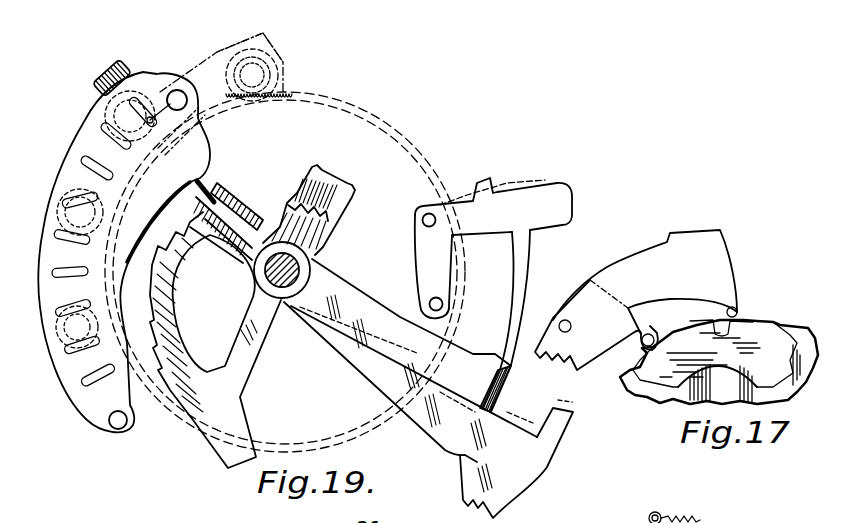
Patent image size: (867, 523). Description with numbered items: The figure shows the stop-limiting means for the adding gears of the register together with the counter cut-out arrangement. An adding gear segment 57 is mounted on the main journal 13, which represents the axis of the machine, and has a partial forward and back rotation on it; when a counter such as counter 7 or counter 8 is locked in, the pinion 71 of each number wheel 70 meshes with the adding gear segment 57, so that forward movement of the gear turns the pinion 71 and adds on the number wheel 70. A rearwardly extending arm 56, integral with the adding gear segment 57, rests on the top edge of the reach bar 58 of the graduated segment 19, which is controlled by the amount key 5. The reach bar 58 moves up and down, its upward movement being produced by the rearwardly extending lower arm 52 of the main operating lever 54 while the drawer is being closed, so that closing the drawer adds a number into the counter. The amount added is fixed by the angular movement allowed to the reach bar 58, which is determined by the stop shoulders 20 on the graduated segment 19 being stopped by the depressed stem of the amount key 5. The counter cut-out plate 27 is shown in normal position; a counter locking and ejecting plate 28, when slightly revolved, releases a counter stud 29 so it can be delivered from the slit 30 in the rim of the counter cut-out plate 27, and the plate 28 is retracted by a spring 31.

In FIG. 19, the amount key 5 is at (99, 77).
In FIG. 17, the counter 7 is at (645, 290).
In FIG. 17, the counter 8 is at (588, 325).
In FIG. 19, the main journal 13 is at (295, 270).
In FIG. 19, the graduated segment 19 is at (222, 206).
In FIG. 19, the stop shoulder 20 is at (208, 200).
In FIG. 17, the counter-cut-out plate 27 is at (743, 330).
In FIG. 17, the counter locking and ejecting plate 28 is at (788, 327).
In FIG. 17, the counter stud 29 is at (737, 306).
In FIG. 17, the slit 30 is at (708, 316).
In FIG. 17, the spring 31 is at (701, 521).
In FIG. 19, the lower arm of main operating lever 52 is at (516, 459).
In FIG. 19, the main operating lever 54 is at (410, 360).
In FIG. 19, the rearwardly extending arm 56 is at (517, 227).
In FIG. 19, the adding gear segment 57 is at (393, 158).
In FIG. 19, the reach bar 58 is at (503, 391).
In FIG. 19, the number wheel 70 is at (268, 44).
In FIG. 19, the pinion 71 is at (75, 213).